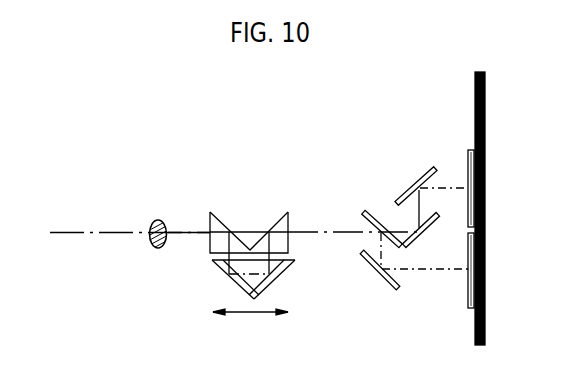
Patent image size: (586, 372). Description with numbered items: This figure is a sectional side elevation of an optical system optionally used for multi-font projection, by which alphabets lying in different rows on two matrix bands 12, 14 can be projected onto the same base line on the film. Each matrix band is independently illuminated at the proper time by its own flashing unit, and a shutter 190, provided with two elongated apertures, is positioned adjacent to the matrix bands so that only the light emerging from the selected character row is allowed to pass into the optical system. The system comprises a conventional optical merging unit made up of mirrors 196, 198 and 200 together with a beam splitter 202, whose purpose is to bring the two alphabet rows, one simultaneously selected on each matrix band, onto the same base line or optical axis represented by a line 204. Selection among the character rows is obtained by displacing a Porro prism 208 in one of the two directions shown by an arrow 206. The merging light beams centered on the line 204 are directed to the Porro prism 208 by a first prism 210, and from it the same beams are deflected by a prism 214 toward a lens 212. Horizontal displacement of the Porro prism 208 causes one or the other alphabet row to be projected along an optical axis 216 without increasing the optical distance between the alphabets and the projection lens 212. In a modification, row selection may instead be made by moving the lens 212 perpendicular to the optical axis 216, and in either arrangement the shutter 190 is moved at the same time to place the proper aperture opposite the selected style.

The matrix band 12 is at (467, 158).
The matrix band 14 is at (466, 299).
The shutter 190 is at (481, 90).
The mirror 196 is at (430, 168).
The mirror 198 is at (415, 242).
The mirror 200 is at (385, 284).
The beam splitter 202 is at (377, 208).
The line 204 is at (343, 233).
The arrow 206 is at (243, 313).
The Porro prism 208 is at (234, 288).
The first prism 210 is at (288, 215).
The lens 212 is at (152, 246).
The prism 214 is at (217, 214).
The optical axis 216 is at (178, 232).